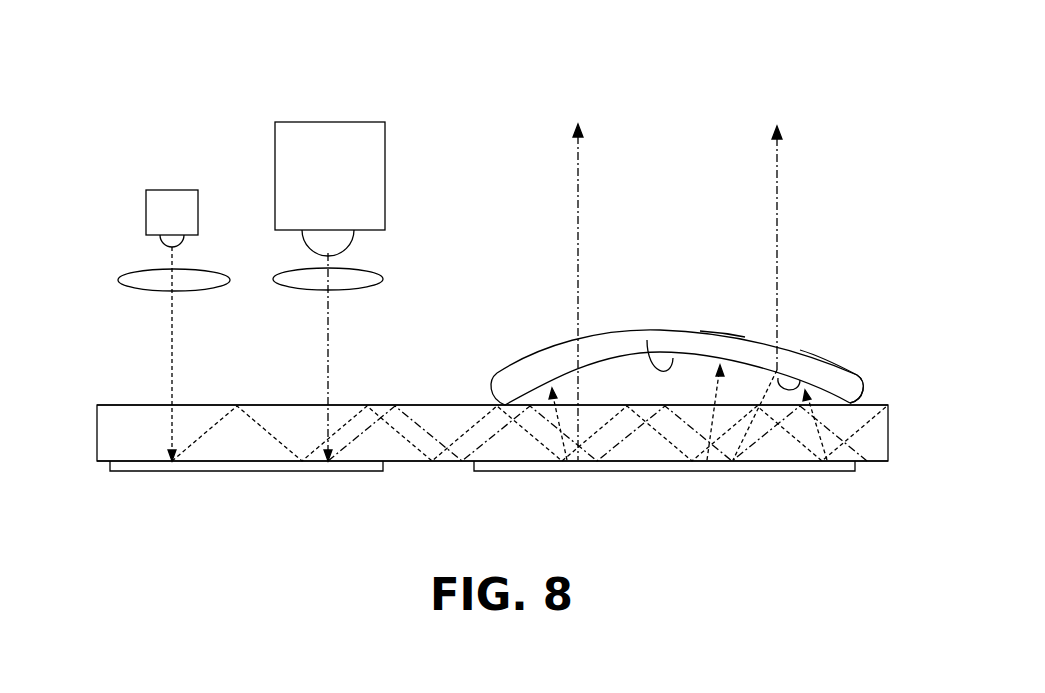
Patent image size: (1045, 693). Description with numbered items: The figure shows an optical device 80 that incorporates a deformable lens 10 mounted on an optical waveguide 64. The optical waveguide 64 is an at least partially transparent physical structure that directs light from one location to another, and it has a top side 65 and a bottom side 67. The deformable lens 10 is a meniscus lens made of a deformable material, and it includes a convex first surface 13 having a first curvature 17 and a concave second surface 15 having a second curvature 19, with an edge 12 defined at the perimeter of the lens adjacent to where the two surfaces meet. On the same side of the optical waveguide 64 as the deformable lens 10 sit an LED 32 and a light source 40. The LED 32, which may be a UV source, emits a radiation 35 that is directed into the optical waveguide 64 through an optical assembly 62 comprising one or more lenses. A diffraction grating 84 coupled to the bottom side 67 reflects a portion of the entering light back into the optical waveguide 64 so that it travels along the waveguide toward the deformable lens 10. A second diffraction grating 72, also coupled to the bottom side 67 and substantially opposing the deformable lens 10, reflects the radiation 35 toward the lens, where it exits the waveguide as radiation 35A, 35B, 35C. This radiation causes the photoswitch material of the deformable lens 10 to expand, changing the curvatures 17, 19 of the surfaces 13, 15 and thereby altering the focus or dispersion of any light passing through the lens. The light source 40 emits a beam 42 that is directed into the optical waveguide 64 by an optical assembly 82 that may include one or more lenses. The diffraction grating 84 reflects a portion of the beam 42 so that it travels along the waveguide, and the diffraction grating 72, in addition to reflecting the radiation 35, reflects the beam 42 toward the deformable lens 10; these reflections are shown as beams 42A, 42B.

The deformable lens 10 is at (803, 357).
The edge 12 is at (860, 380).
The first surface 13 is at (833, 367).
The second surface 15 is at (778, 378).
The first curvature 17 is at (730, 335).
The second curvature 19 is at (647, 340).
The LED 32 is at (172, 205).
The radiation 35 is at (176, 320).
The radiation 35A is at (580, 405).
The radiation 35B is at (713, 392).
The radiation 35C is at (848, 470).
The light source 40 is at (330, 140).
The beam 42 is at (332, 328).
The beam 42A is at (578, 186).
The beam 42B is at (777, 163).
The optical assembly 62 is at (123, 275).
The optical waveguide 64 is at (100, 425).
The top side 65 is at (127, 405).
The bottom side 67 is at (408, 463).
The diffraction grating 72 is at (500, 472).
The optical device 80 is at (803, 95).
The optical assembly 82 is at (375, 272).
The diffraction grating 84 is at (218, 473).